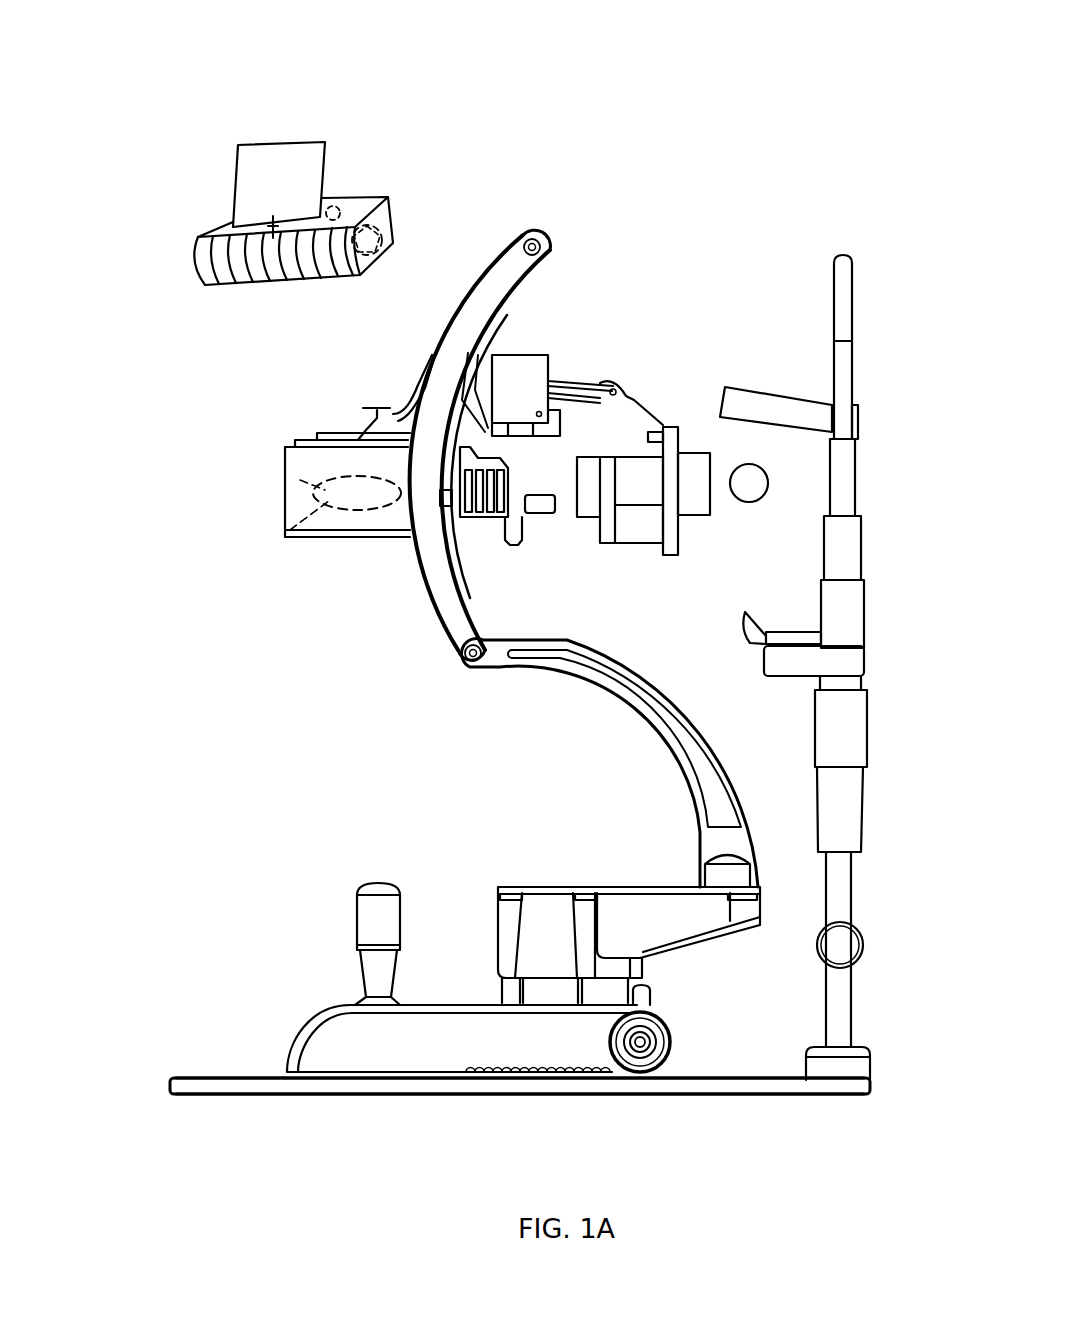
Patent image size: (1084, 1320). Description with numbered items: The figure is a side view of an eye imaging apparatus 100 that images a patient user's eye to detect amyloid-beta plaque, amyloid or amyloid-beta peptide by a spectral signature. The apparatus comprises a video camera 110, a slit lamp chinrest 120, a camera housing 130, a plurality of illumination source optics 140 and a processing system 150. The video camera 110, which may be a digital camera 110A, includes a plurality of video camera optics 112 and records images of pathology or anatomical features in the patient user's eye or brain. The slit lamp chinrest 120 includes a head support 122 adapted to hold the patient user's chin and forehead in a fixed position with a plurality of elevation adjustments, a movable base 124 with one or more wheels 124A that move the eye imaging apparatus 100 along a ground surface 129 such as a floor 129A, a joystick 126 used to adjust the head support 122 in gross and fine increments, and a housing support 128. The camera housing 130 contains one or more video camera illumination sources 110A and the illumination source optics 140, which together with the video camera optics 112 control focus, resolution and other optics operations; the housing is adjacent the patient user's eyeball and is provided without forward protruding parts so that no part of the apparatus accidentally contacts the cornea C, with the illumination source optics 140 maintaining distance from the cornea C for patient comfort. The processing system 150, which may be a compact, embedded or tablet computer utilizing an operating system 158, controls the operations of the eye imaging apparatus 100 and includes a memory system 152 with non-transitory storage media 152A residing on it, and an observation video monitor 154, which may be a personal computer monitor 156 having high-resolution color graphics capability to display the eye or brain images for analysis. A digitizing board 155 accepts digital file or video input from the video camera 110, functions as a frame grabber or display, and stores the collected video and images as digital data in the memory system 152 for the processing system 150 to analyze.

The eye imaging apparatus 100 is at (132, 73).
The video camera 110 is at (300, 487).
The digital camera 110A is at (320, 510).
The video camera optics 112 is at (455, 537).
The slit lamp chinrest 120 is at (437, 656).
The head support 122 is at (850, 257).
The movable base 124 is at (413, 1043).
The wheels 124A is at (628, 1052).
The joystick 126 is at (330, 918).
The housing support 128 is at (188, 1068).
The ground surface 129 is at (197, 1094).
The floor 129A is at (257, 1097).
The camera housing 130 is at (243, 433).
The illumination source optics 140 is at (516, 376).
The processing system 150 is at (440, 200).
The memory system 152 is at (367, 257).
The non-transitory storage media 152A is at (387, 197).
The observation video monitor 154 is at (247, 180).
The digitizing board 155 is at (282, 157).
The personal computer monitor 156 is at (260, 155).
The operating system 158 is at (333, 203).
The cornea C is at (738, 470).